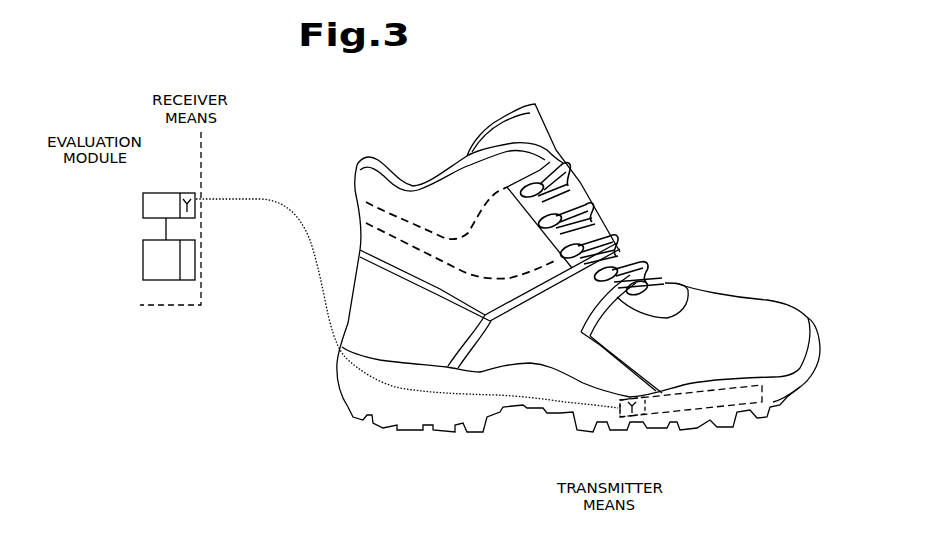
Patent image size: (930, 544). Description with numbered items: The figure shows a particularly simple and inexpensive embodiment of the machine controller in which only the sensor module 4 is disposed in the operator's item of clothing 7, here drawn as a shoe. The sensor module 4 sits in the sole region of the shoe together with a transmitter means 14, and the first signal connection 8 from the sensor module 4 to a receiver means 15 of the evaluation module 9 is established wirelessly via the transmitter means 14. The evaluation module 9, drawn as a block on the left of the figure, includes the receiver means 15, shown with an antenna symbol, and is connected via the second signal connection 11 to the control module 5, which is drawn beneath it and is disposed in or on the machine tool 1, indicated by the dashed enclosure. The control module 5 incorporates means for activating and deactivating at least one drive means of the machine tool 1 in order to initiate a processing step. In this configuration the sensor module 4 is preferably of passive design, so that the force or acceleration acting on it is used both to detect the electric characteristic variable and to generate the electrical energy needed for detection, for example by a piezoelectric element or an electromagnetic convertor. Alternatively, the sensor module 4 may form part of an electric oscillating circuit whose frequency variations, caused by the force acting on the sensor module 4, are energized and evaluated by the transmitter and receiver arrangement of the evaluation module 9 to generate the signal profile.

The machine tool 1 is at (171, 307).
The sensor module 4 is at (730, 392).
The control module 5 is at (155, 275).
The item of clothing 7 is at (641, 181).
The first signal connection 8 is at (316, 257).
The evaluation module 9 is at (164, 193).
The second signal connection 11 is at (165, 231).
The transmitter means 14 is at (625, 419).
The receiver means 15 is at (188, 193).